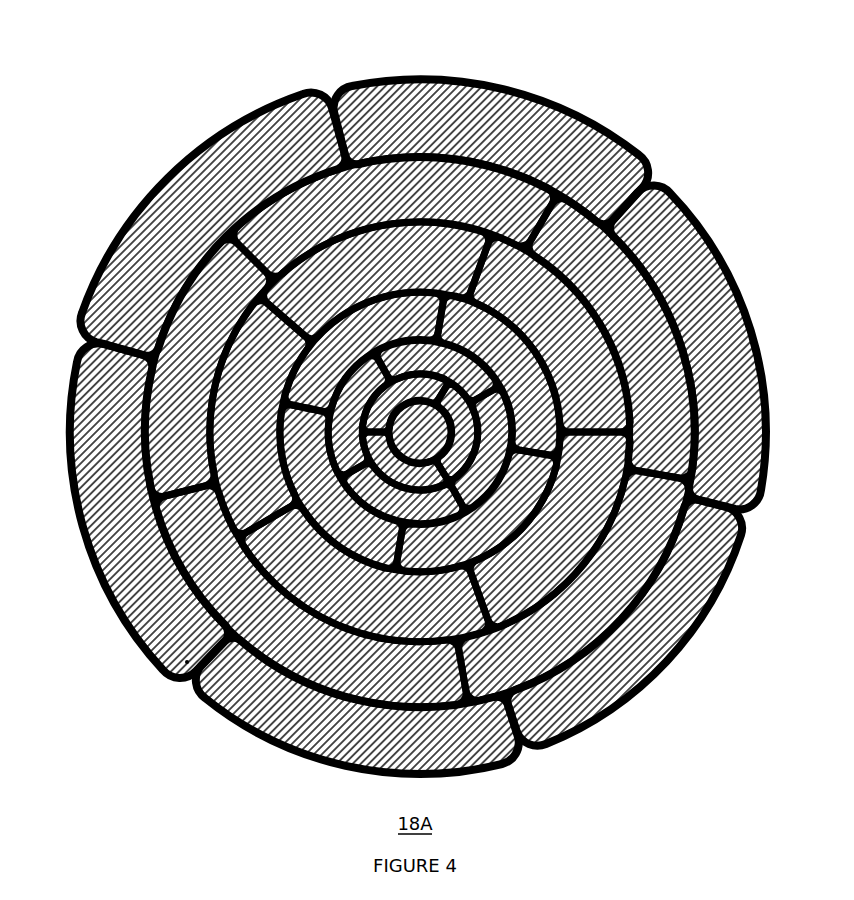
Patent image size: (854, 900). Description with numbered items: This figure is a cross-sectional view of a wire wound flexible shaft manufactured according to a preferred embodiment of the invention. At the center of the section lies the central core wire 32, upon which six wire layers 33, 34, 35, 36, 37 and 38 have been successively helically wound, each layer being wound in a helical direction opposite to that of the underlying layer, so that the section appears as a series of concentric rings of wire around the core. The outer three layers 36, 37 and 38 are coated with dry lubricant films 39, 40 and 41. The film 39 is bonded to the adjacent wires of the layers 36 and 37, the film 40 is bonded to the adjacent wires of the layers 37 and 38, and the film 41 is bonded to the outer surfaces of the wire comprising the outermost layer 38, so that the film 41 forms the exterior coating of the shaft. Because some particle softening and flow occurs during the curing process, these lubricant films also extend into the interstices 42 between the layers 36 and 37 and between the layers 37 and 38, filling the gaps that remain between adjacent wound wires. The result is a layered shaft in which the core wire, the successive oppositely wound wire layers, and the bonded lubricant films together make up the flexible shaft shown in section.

The central core wire 32 is at (430, 437).
The wire layer 33 is at (665, 255).
The wire layer 34 is at (590, 212).
The wire layer 35 is at (455, 318).
The wire layer 36 is at (418, 250).
The wire layer 37 is at (320, 217).
The wire layer 38 is at (185, 222).
The dry lubricant film 39 is at (353, 640).
The dry lubricant film 40 is at (520, 687).
The dry lubricant film 41 is at (672, 668).
The interstices 42 is at (98, 343).